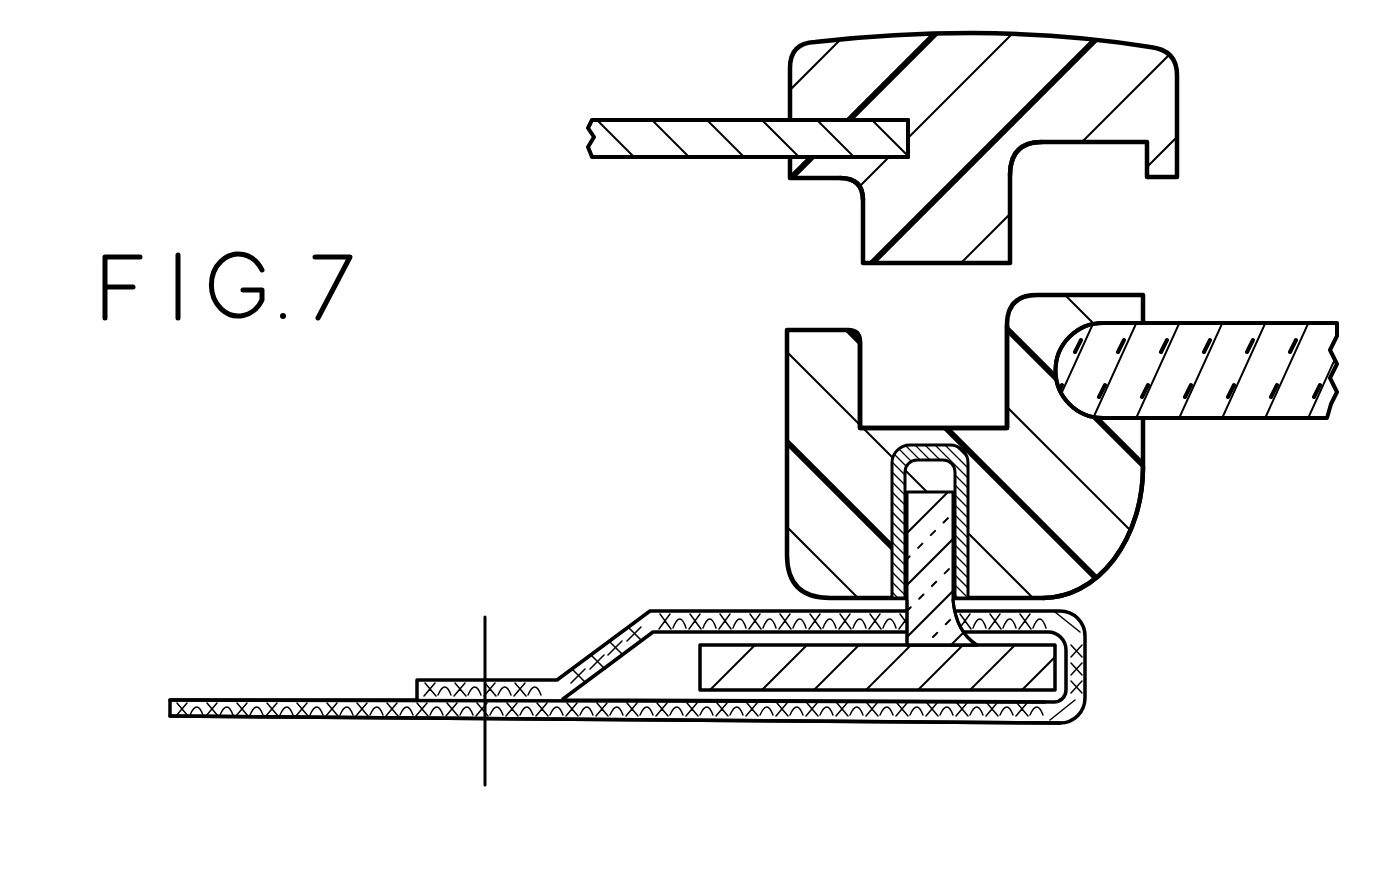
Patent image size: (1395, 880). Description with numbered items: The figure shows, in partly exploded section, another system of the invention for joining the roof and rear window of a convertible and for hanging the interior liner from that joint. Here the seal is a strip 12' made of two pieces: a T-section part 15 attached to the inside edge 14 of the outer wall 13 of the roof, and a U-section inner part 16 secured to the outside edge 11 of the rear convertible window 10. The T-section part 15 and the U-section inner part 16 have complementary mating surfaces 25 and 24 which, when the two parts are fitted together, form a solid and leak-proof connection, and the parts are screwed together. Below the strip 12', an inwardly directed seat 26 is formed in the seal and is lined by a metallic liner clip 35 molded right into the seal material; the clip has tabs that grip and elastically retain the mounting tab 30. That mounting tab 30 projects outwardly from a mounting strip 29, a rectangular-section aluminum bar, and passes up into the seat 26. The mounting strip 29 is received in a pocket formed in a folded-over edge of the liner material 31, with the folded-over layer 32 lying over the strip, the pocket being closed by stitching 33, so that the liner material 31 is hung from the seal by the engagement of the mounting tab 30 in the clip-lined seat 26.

The rear convertible window 10 is at (1300, 357).
The outside edge 11 is at (1100, 385).
The strip 12' is at (1149, 532).
The outer wall 13 is at (627, 135).
The inside edge 14 is at (853, 137).
The T-section part 15 is at (1043, 53).
The U-section inner part 16 is at (793, 387).
The mating surface 24 is at (1007, 387).
The mating surface 25 is at (962, 266).
The seat 26 is at (953, 537).
The mounting strip 29 is at (807, 667).
The mounting tab 30 is at (927, 597).
The liner material 31 is at (250, 717).
The upper sheet 32 is at (658, 657).
The stitching 33 is at (488, 640).
The metallic liner clip 35 is at (900, 487).